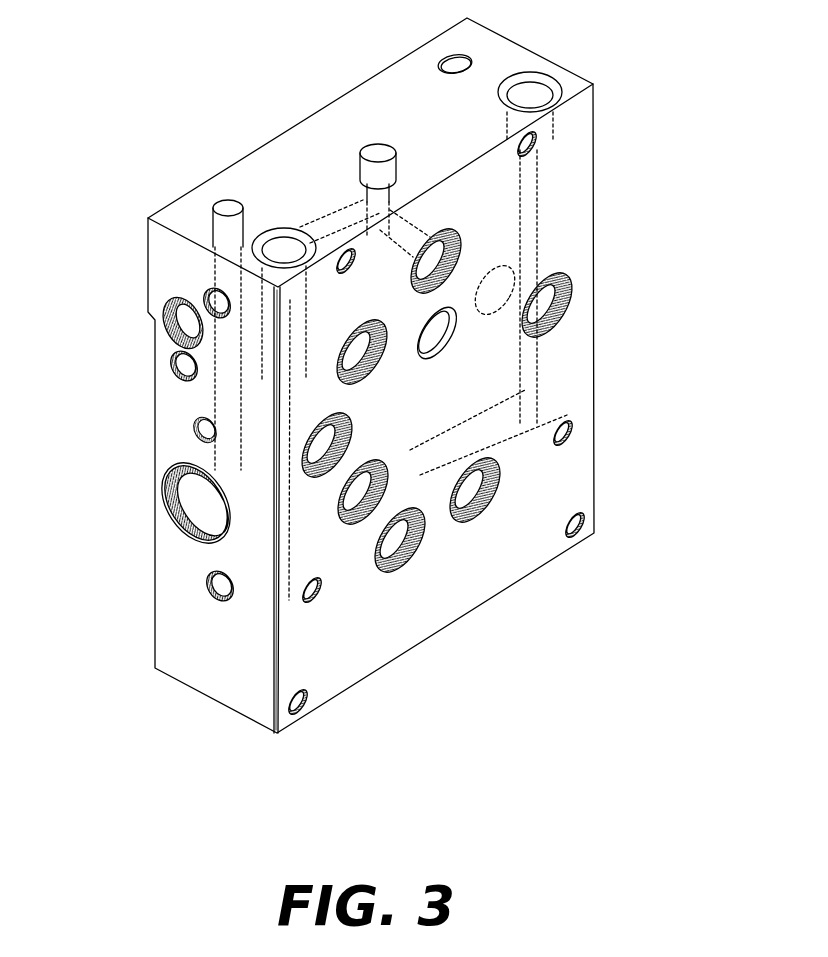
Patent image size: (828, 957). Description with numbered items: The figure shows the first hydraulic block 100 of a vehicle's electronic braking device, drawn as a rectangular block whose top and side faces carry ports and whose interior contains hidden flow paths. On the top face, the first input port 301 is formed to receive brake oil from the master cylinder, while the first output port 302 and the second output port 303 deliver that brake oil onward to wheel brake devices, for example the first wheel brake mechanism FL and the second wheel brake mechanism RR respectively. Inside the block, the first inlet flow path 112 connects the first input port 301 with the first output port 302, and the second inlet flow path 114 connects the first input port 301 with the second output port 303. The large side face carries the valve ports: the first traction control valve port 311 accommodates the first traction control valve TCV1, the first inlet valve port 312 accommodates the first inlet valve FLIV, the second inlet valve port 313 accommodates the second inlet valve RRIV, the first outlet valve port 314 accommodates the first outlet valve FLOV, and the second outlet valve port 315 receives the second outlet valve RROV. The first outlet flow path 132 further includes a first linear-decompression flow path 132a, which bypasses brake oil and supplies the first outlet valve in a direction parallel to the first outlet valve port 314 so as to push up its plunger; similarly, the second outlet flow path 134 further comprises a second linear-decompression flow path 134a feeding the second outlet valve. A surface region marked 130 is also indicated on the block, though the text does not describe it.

The first hydraulic block 100 is at (181, 41).
The first inlet flow path 112 is at (258, 413).
The second inlet flow path 114 is at (485, 270).
The front surface 130 is at (525, 458).
The first outlet flow path 132 is at (277, 538).
The first linear-decompression flow path 132a is at (308, 534).
The second outlet flow path 134 is at (542, 367).
The second linear-decompression flow path 134a is at (550, 378).
The first input port 301 is at (246, 188).
The first output port 302 is at (272, 247).
The second output port 303 is at (543, 85).
The first traction control valve port 311 is at (320, 345).
The first inlet valve port 312 is at (312, 443).
The second inlet valve port 313 is at (570, 298).
The first outlet valve port 314 is at (410, 555).
The second outlet valve port 315 is at (480, 513).